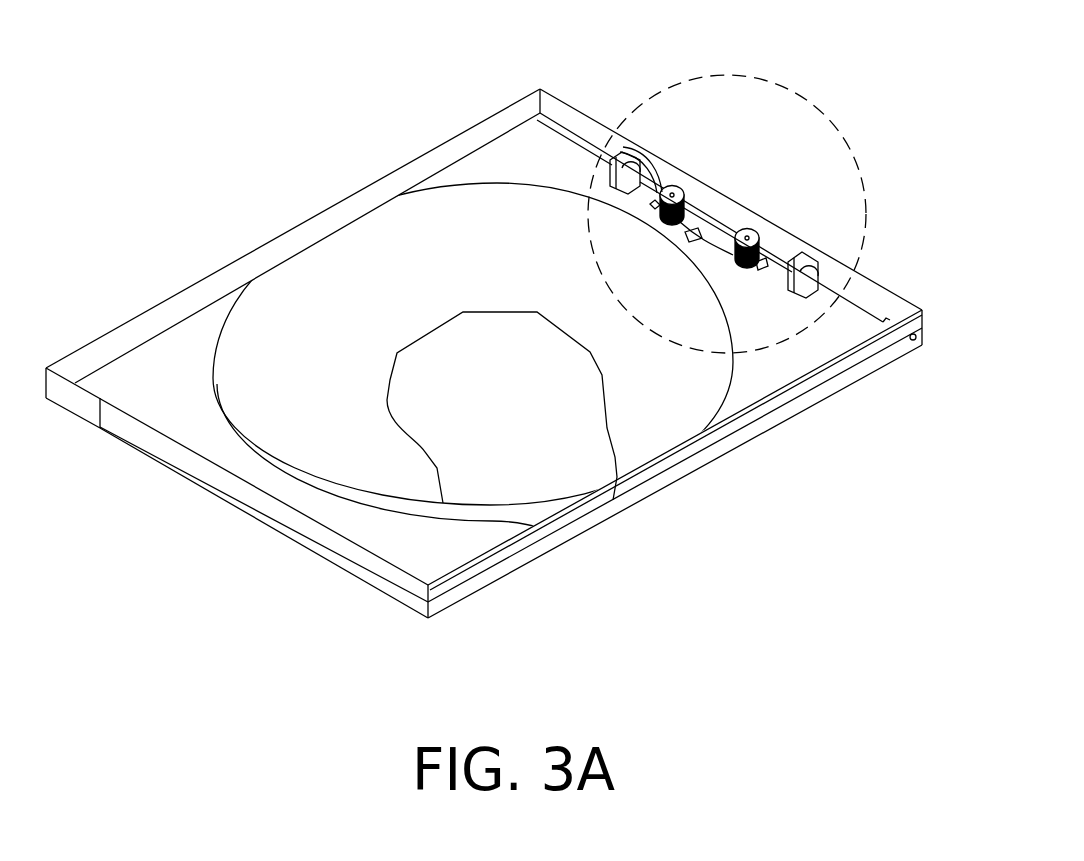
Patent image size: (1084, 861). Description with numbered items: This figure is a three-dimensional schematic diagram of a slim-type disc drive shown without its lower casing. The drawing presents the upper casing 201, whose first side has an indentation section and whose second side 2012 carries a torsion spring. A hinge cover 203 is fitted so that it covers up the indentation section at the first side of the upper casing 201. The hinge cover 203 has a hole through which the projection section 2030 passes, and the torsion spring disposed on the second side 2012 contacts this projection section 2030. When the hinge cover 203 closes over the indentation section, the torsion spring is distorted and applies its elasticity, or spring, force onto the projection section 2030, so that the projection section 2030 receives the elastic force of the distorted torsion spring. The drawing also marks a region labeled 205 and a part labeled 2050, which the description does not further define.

The upper casing 201 is at (760, 407).
The hinge cover 203 is at (668, 477).
The second side 2012 is at (497, 168).
The pivoting assembly 205 is at (715, 225).
The projection section 2030 is at (628, 150).
The shaft 2050 is at (653, 140).